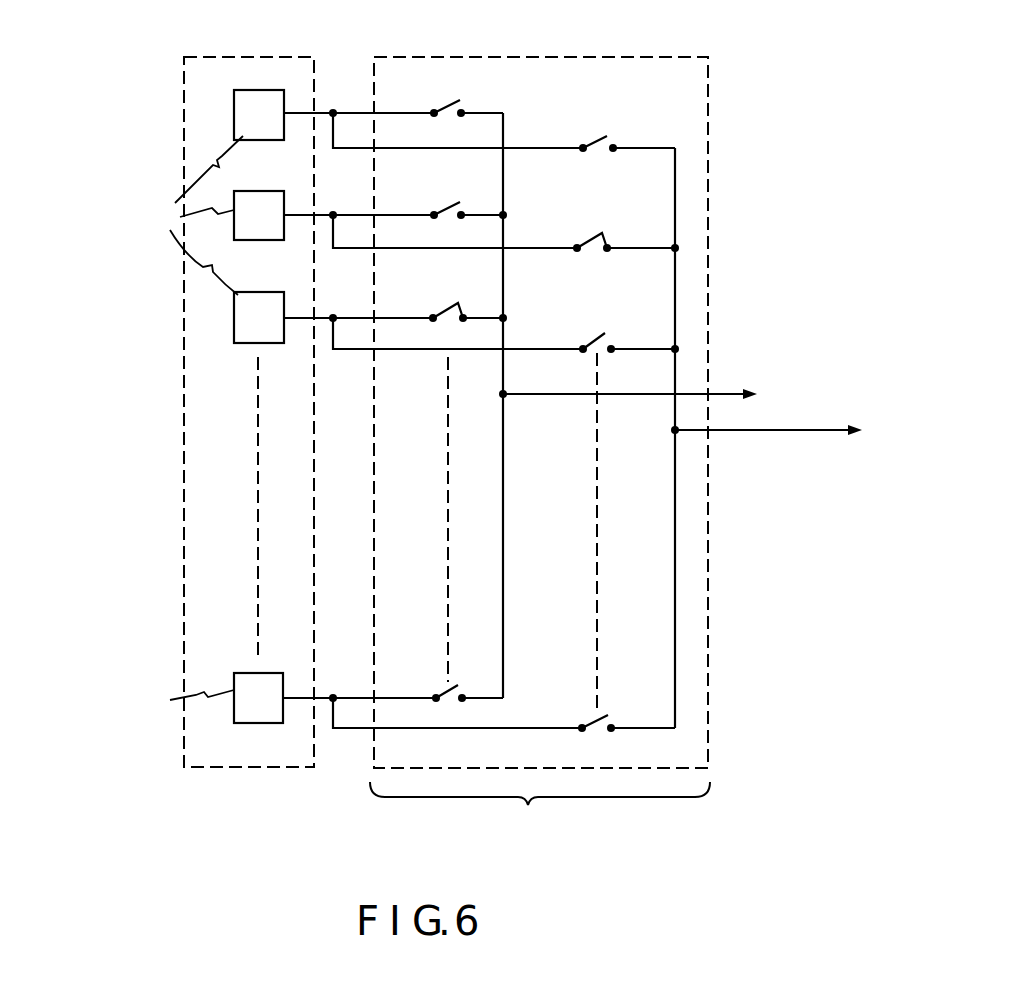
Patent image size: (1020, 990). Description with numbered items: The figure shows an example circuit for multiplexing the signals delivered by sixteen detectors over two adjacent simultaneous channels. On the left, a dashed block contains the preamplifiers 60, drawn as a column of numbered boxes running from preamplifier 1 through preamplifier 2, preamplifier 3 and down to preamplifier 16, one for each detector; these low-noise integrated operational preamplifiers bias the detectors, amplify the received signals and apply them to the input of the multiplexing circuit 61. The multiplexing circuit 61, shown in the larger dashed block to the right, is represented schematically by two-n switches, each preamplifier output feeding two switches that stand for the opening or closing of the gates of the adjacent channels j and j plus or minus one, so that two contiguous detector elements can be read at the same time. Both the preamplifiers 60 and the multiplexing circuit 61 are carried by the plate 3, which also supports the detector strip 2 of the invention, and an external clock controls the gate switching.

The preamplifiers 60 is at (236, 70).
The multiplexing circuit 61 is at (636, 70).
The preamplifier 1 is at (259, 115).
The strip 2 is at (259, 215).
The plate 3 is at (259, 317).
The preamplifier 16 is at (258, 698).